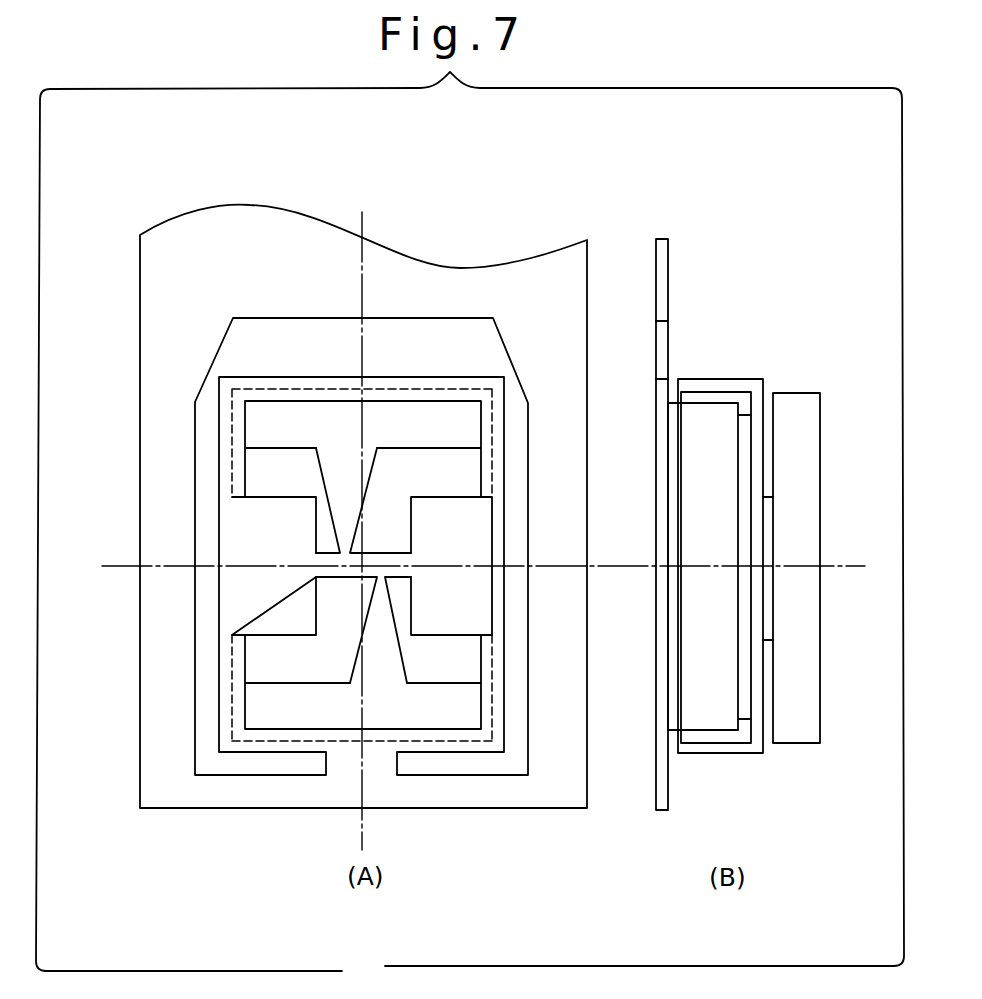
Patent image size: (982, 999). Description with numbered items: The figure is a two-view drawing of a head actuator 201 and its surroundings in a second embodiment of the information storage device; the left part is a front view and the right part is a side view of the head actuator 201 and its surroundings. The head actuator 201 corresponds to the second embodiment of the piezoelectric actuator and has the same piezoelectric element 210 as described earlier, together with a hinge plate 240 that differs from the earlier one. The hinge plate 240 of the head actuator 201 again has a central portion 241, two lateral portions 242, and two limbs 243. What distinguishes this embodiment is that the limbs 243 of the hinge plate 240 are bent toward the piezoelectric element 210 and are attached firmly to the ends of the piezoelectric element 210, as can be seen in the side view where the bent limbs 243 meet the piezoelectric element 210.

The head actuator 201 is at (692, 565).
The piezoelectric element 210 is at (700, 690).
The hinge plate 240 is at (727, 750).
The central portion 241 is at (347, 572).
The lateral portions 242 is at (243, 598).
The limbs 243 is at (265, 418).